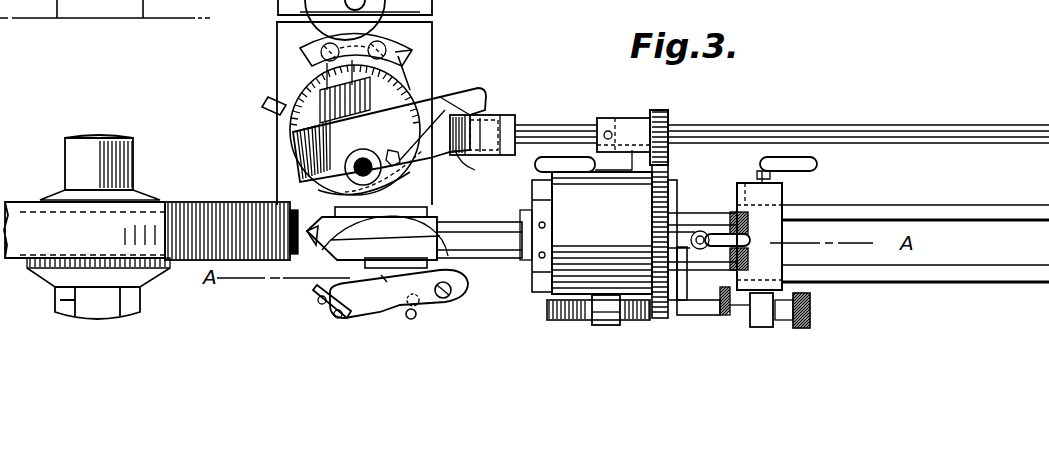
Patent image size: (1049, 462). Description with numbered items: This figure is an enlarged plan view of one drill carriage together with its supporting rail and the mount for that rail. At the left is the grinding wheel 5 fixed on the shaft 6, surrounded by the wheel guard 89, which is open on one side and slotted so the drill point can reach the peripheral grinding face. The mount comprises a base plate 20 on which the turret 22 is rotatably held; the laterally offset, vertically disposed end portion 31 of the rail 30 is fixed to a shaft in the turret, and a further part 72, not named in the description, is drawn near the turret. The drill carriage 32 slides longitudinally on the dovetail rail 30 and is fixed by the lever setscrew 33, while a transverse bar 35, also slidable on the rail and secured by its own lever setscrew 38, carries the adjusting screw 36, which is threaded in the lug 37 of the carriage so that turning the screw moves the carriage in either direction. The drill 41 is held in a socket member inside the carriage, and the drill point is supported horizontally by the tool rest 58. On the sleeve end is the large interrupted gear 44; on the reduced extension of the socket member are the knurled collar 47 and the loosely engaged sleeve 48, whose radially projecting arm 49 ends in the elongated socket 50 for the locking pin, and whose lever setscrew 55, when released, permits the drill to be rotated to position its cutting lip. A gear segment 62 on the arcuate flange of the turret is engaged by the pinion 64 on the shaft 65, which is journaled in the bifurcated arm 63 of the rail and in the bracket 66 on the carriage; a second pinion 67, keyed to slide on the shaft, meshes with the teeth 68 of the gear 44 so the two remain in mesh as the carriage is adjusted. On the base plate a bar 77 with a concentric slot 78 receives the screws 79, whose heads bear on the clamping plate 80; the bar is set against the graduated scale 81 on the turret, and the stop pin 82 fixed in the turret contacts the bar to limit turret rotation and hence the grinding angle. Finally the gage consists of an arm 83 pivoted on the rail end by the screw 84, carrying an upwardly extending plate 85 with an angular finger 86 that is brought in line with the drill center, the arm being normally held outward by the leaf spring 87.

The grinding wheel 5 is at (308, 247).
The shaft 6 is at (128, 160).
The base plate 20 is at (283, 32).
The turret 22 is at (300, 146).
The rail 30 is at (926, 206).
The end portion of rail 31 is at (330, 173).
The drill carriage 32 is at (586, 233).
The lever setscrew 33 is at (575, 152).
The transverse bar 35 is at (772, 226).
The adjusting screw 36 is at (812, 310).
The lug 37 is at (567, 320).
The lever setscrew 38 is at (790, 156).
The drill 41 is at (414, 238).
The interrupted gear 44 is at (660, 242).
The knurled collar 47 is at (750, 250).
The sleeve 48 is at (690, 230).
The arm 49 is at (622, 312).
The socket 50 is at (698, 302).
The lever setscrew 55 is at (758, 240).
The tool rest 58 is at (407, 208).
The gear segment 62 is at (478, 96).
The arm 63 is at (462, 160).
The pinion 64 is at (513, 117).
The shaft 65 is at (722, 128).
The bracket 66 is at (632, 126).
The pinion 67 is at (672, 120).
The teeth 68 is at (668, 182).
The strap 72 is at (348, 182).
The bar 77 is at (406, 66).
The slot 78 is at (412, 58).
The screws 79 is at (332, 48).
The clamping plate 80 is at (390, 22).
The graduated scale 81 is at (289, 88).
The stop pin 82 is at (270, 110).
The arm 83 is at (399, 294).
The screw 84 is at (430, 313).
The plate 85 is at (330, 310).
The finger 86 is at (318, 288).
The leaf spring 87 is at (403, 313).
The wheel guard 89 is at (170, 222).